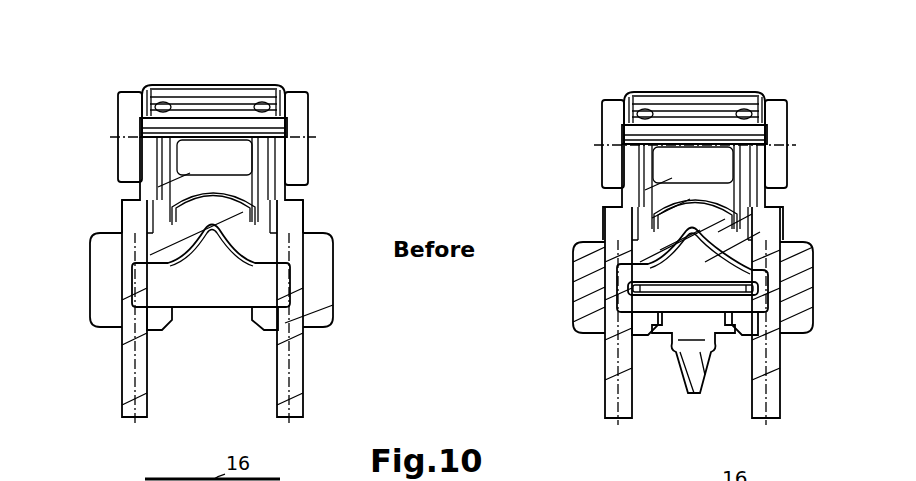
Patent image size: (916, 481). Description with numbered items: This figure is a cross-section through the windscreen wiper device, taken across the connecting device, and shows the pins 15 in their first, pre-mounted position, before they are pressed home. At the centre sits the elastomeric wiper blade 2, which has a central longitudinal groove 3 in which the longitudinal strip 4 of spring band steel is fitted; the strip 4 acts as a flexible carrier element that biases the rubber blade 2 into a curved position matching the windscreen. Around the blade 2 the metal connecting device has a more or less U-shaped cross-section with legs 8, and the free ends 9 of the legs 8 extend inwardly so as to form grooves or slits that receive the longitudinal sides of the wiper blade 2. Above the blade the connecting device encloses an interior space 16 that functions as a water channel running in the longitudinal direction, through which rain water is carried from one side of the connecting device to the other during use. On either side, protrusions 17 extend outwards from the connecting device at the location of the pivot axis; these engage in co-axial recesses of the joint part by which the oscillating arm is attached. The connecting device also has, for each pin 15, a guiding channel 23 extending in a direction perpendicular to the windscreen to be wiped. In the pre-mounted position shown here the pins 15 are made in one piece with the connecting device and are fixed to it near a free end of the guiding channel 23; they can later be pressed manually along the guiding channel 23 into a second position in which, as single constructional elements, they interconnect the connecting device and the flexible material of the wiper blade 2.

The wiper blade 2 is at (697, 360).
The central longitudinal groove 3 is at (272, 82).
The longitudinal strip 4 is at (723, 288).
The legs 8 is at (120, 280).
The free ends 9 is at (253, 317).
The pins 15 is at (277, 377).
The interior space 16 is at (205, 160).
The protrusions 17 is at (118, 137).
The guiding channel 23 is at (120, 325).